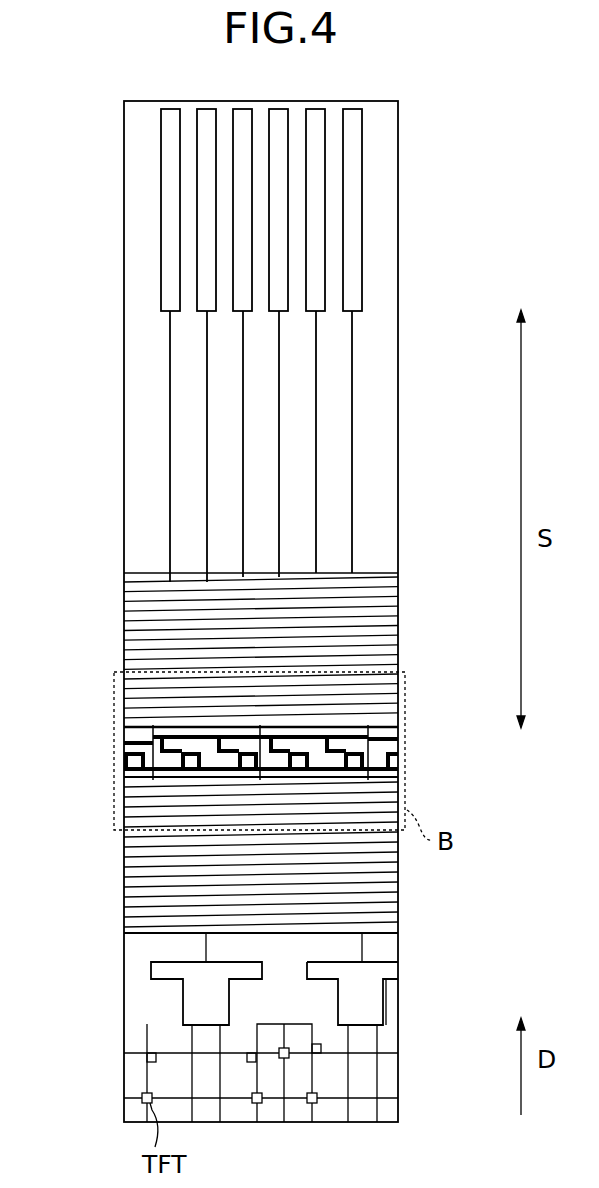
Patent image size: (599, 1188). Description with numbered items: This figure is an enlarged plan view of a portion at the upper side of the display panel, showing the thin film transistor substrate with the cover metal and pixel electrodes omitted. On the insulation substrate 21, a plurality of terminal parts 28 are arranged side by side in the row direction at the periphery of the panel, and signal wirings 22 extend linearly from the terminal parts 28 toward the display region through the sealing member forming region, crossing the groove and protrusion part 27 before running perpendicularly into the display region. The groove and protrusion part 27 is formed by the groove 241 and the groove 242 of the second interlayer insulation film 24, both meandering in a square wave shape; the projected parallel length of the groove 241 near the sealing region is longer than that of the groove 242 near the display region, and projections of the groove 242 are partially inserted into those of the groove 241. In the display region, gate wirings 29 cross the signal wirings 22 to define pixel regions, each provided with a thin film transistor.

The insulation substrate 21 is at (388, 1037).
The signal wirings 22 is at (352, 407).
The second interlayer insulation film 24 is at (124, 743).
The groove and protrusion part 27 is at (264, 730).
The terminal parts 28 is at (362, 183).
The gate wirings 29 is at (124, 1057).
The groove 241 is at (392, 735).
The groove 242 is at (392, 770).